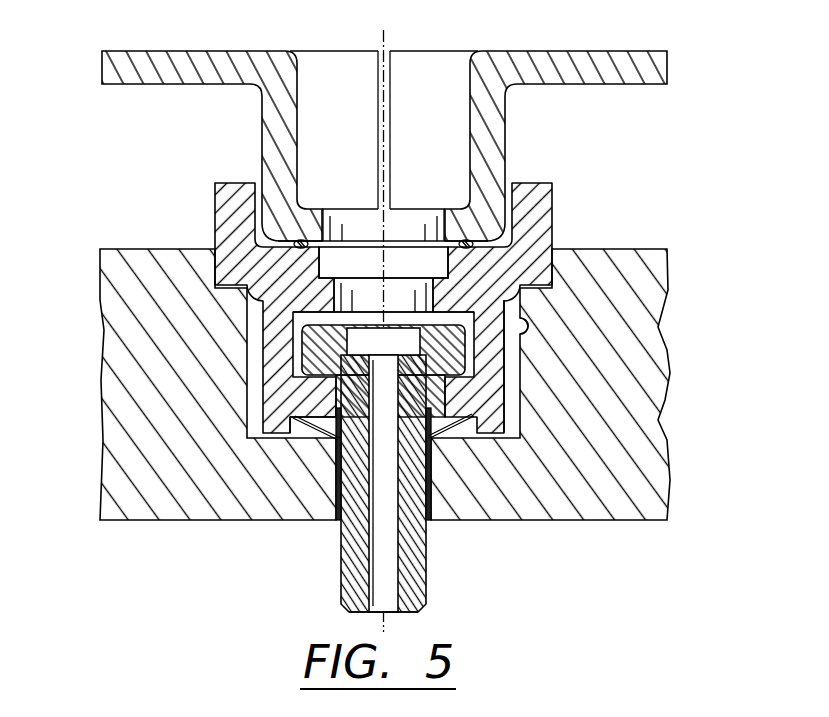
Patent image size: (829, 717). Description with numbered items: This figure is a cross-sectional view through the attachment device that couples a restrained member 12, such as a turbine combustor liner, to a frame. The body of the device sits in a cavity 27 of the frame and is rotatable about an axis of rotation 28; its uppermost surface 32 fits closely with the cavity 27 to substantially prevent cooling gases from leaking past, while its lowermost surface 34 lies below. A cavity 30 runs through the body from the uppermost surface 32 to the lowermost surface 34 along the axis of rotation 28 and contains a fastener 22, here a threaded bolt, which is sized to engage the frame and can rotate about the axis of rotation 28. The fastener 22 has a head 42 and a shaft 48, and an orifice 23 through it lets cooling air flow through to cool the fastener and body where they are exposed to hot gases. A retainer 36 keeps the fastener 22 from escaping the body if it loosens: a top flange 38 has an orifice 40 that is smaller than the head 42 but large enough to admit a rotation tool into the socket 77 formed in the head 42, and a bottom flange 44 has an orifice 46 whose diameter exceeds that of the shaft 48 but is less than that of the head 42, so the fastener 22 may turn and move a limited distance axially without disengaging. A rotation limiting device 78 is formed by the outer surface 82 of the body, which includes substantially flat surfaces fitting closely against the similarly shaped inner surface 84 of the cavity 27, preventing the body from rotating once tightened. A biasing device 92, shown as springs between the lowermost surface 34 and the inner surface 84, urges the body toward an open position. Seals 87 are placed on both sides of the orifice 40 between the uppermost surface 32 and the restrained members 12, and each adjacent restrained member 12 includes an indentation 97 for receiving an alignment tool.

The restrained member 12 is at (248, 51).
The fastener 22 is at (427, 560).
The orifice 23 is at (398, 585).
The cavity 27 is at (515, 415).
The axis of rotation 28 is at (386, 40).
The cavity 30 is at (512, 249).
The uppermost surface 32 is at (452, 211).
The lowermost surface 34 is at (333, 423).
The retainer 36 is at (436, 470).
The top flange 38 is at (296, 340).
The orifice 40 is at (364, 290).
The head 42 is at (455, 351).
The bottom flange 44 is at (318, 397).
The orifice 46 is at (337, 438).
The shaft 48 is at (342, 601).
The socket 77 is at (308, 314).
The rotation limiting device 78 is at (256, 374).
The outer surface 82 is at (506, 394).
The inner surface 84 is at (521, 328).
The seal 87 is at (300, 240).
The biasing device 92 is at (305, 437).
The indentation 97 is at (346, 123).